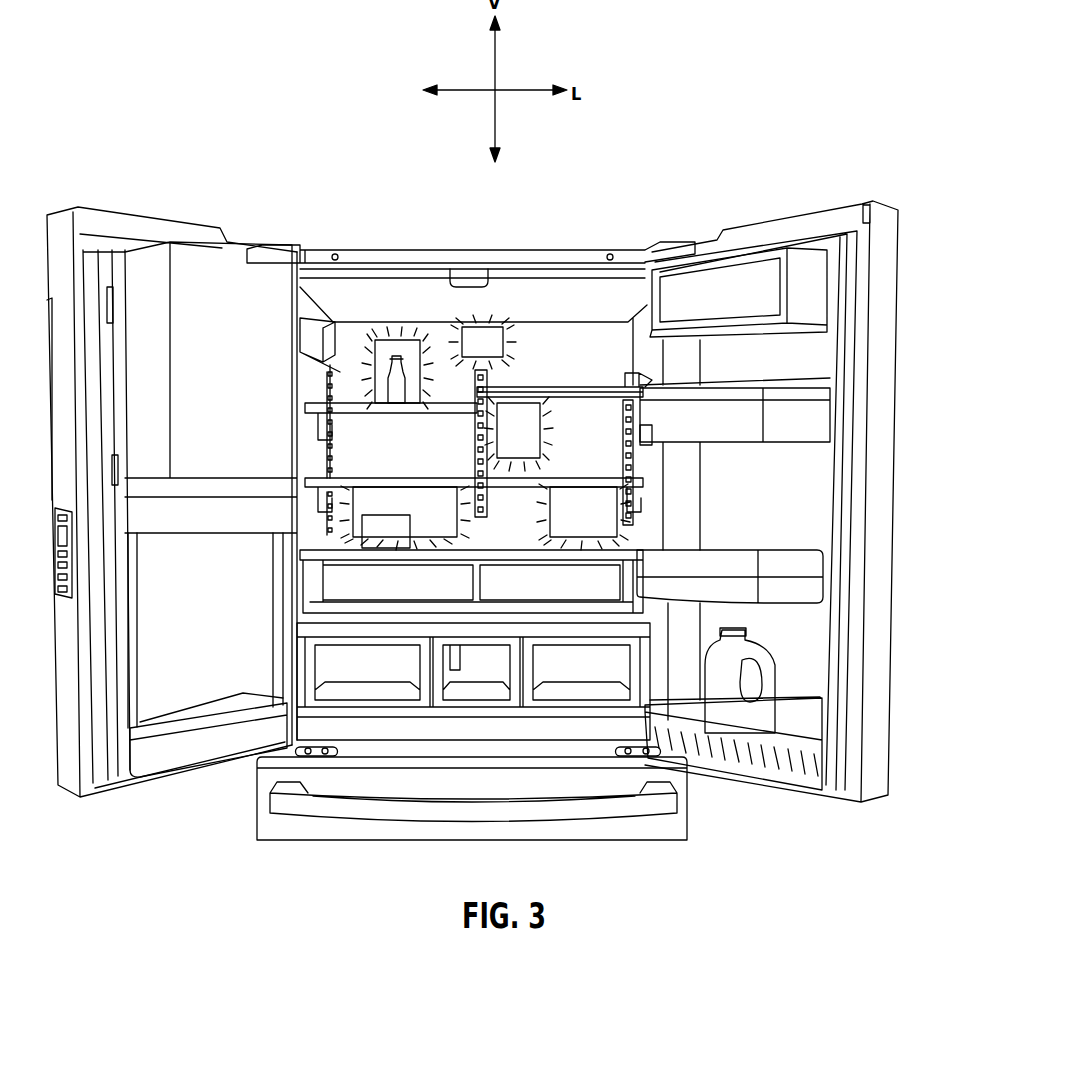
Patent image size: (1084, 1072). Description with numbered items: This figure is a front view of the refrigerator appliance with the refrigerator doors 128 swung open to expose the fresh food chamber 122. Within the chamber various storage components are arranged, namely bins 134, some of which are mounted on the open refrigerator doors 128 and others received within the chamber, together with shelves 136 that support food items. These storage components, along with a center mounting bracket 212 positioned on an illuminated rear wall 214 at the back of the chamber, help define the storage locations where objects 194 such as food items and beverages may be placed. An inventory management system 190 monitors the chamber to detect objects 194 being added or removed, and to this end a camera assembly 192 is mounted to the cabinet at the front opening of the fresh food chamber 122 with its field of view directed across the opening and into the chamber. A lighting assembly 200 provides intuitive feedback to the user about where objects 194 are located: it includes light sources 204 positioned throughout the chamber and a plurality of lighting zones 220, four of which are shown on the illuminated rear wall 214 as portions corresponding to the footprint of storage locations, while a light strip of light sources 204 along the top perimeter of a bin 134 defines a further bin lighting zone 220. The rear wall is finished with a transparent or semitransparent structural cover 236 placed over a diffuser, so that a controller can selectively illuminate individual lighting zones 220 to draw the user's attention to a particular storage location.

The fresh food chamber 122 is at (608, 443).
The refrigerator doors 128 is at (883, 297).
The bins 134 is at (808, 422).
The shelves 136 is at (576, 361).
The inventory management system 190 is at (473, 280).
The camera assembly 192 is at (458, 268).
The objects 194 is at (396, 356).
The lighting assembly 200 is at (548, 388).
The light sources 204 is at (357, 490).
The center mounting bracket 212 is at (477, 457).
The illuminated rear wall 214 is at (590, 543).
The lighting zones 220 is at (422, 386).
The structural cover 236 is at (597, 378).